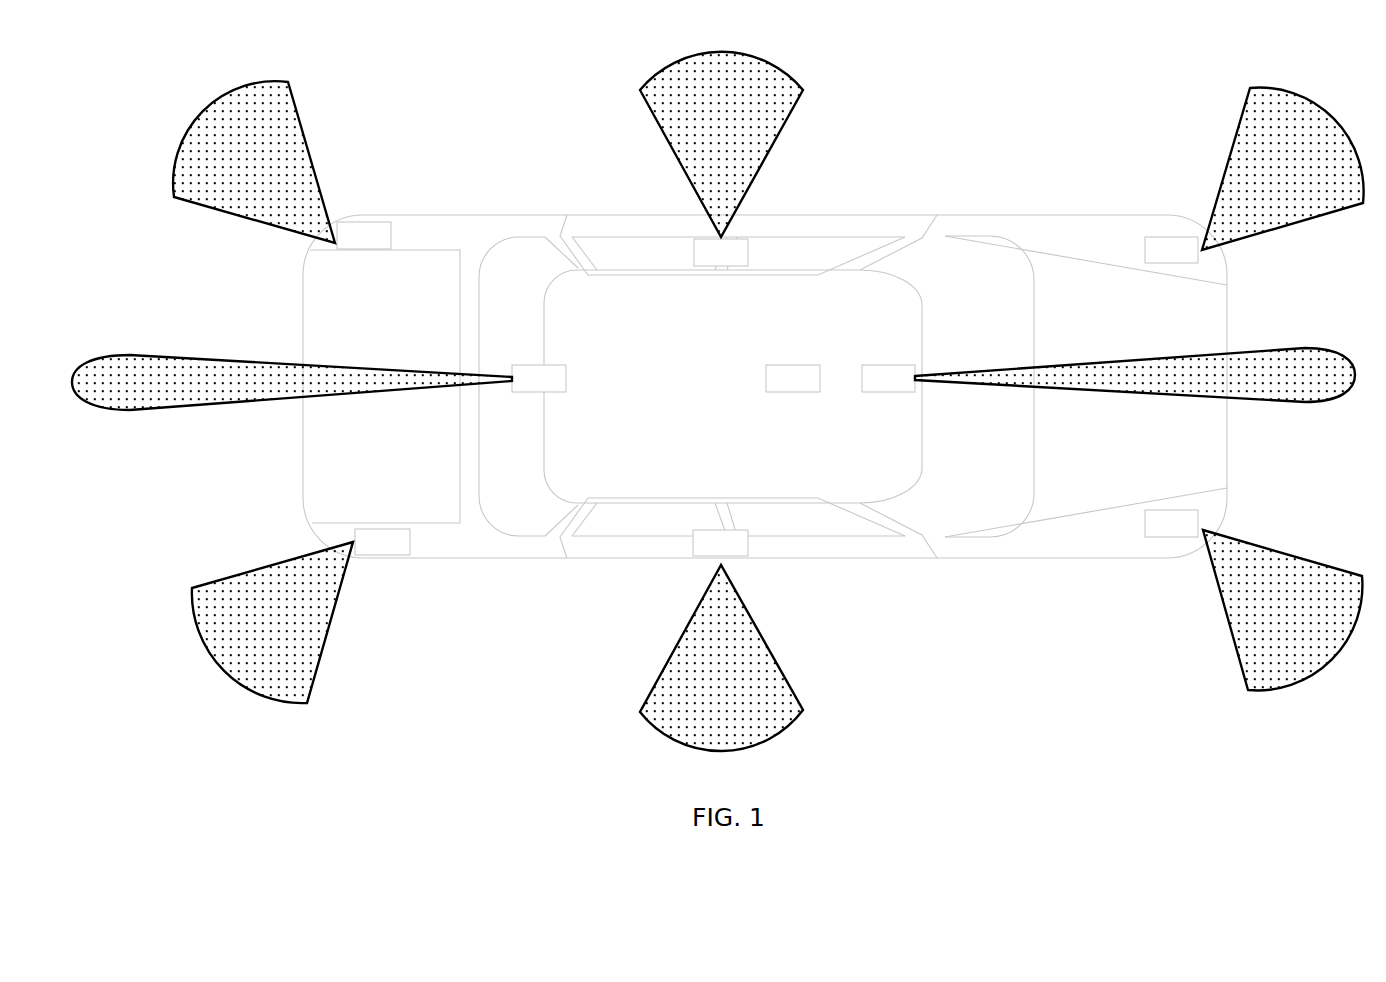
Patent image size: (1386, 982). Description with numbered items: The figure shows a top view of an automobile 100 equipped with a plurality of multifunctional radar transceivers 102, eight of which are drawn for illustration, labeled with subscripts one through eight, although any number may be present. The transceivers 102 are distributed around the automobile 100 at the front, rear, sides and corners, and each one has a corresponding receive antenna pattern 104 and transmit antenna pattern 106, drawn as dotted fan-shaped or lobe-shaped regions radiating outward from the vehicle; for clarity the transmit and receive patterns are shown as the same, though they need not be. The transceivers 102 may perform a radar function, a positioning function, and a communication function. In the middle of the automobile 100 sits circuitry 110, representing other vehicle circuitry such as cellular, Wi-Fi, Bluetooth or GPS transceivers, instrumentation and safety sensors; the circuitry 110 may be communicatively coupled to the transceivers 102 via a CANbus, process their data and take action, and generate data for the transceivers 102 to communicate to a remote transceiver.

The automobile 100 is at (622, 216).
The multifunctional radar transceiver 102 is at (1183, 259).
The receive antenna pattern 104 is at (719, 401).
The transmit antenna pattern 106 is at (719, 401).
The circuitry 110 is at (809, 387).